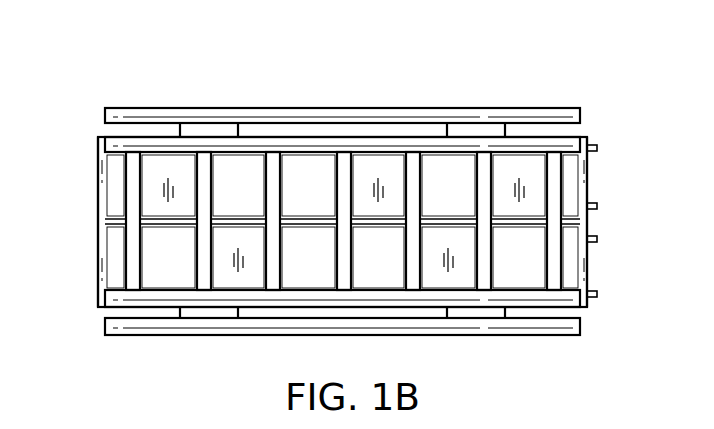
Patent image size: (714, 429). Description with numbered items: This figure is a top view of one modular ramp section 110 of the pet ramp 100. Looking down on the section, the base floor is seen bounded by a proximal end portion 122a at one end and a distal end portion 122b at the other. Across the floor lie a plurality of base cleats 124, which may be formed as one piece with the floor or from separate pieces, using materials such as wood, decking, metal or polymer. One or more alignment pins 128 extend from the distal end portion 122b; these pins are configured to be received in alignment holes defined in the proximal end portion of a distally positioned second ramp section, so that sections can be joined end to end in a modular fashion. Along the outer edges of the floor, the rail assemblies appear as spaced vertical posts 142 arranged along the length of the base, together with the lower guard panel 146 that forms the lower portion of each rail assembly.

The pet ramp 100 is at (349, 177).
The ramp section 110 is at (349, 195).
The proximal end portion 122a is at (64, 222).
The distal end portion 122b is at (628, 222).
The base cleat 124 is at (395, 224).
The alignment pin 128 is at (629, 221).
The vertical post 142 is at (346, 88).
The lower guard panel 146 is at (368, 118).